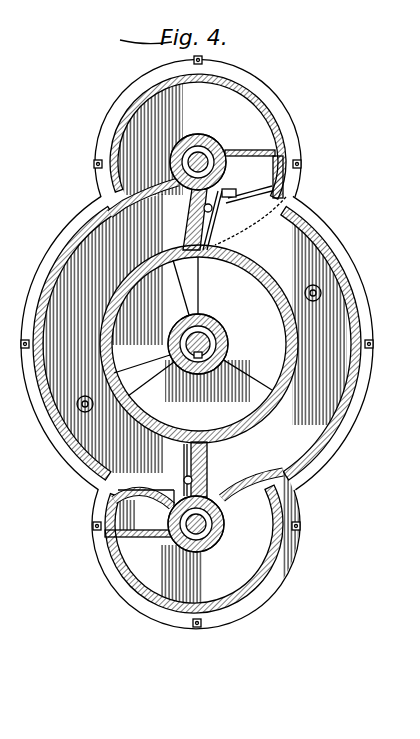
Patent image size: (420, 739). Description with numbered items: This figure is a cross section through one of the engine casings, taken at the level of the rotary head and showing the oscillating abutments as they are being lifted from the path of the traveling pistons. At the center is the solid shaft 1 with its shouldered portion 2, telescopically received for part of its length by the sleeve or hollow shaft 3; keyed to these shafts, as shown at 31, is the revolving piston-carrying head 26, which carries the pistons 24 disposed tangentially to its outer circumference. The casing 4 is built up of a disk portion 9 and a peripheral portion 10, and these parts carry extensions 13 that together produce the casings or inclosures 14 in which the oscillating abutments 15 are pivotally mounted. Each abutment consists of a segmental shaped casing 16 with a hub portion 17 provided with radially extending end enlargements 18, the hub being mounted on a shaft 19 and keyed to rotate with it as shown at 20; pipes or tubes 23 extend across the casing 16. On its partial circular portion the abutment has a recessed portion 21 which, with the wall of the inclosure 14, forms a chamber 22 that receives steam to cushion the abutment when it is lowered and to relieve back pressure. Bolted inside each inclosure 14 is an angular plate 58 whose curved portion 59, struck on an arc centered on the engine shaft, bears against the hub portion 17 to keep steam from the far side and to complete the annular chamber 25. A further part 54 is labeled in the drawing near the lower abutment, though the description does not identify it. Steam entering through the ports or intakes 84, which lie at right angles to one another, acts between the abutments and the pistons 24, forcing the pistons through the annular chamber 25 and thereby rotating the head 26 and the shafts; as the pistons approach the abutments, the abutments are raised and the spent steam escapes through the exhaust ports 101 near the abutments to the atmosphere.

The solid shaft 1 is at (226, 348).
The shouldered portion 2 is at (176, 342).
The sleeve or hollow shaft 3 is at (216, 331).
The casing 4 is at (343, 410).
The disk portion 9 is at (89, 412).
The peripheral portion 10 is at (112, 490).
The extension 13 is at (263, 128).
The casing or inclosure 14 is at (243, 107).
The oscillating abutment 15 is at (250, 163).
The segmental shaped casing 16 is at (243, 208).
The hub portion 17 is at (212, 142).
The radially extending end enlargement 18 is at (197, 147).
The shaft 19 is at (170, 157).
The key 20 is at (212, 148).
The recessed portion 21 is at (274, 156).
The chamber 22 is at (278, 188).
The pipe or tube 23 is at (247, 210).
The piston 24 is at (219, 252).
The annular chamber 25 is at (306, 281).
The revolving piston-carrying head 26 is at (267, 412).
The key 31 is at (228, 352).
The arm 54 is at (265, 495).
The angular plate 58 is at (94, 164).
The curved portion 59 is at (112, 202).
The port or intake 84 is at (263, 230).
The exhaust port 101 is at (320, 292).